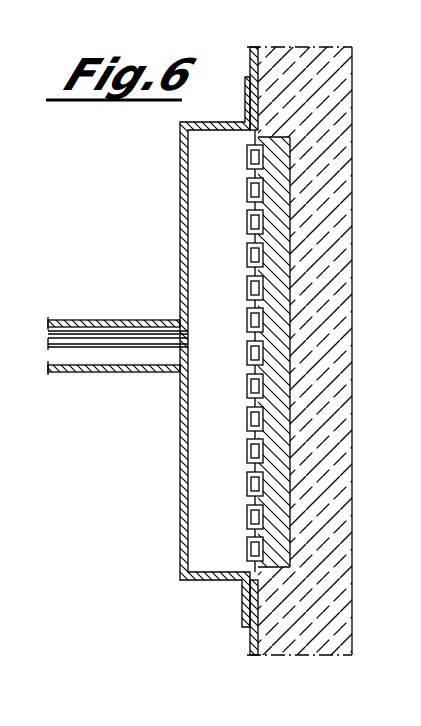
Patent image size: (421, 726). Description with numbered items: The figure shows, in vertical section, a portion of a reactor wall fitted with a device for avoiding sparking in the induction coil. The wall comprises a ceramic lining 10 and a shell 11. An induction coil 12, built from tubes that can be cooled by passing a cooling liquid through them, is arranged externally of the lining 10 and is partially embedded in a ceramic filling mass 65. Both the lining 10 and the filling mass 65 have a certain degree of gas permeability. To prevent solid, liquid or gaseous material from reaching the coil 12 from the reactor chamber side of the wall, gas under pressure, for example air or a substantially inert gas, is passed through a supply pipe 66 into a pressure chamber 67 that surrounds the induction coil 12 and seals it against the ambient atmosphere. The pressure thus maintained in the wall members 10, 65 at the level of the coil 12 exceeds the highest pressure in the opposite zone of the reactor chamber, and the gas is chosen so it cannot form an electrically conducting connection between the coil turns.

The ceramic lining 10 is at (352, 158).
The shell 11 is at (250, 70).
The induction coil 12 is at (247, 440).
The ceramic filling mass 65 is at (250, 241).
The supply pipe 66 is at (124, 328).
The pressure chamber 67 is at (180, 166).